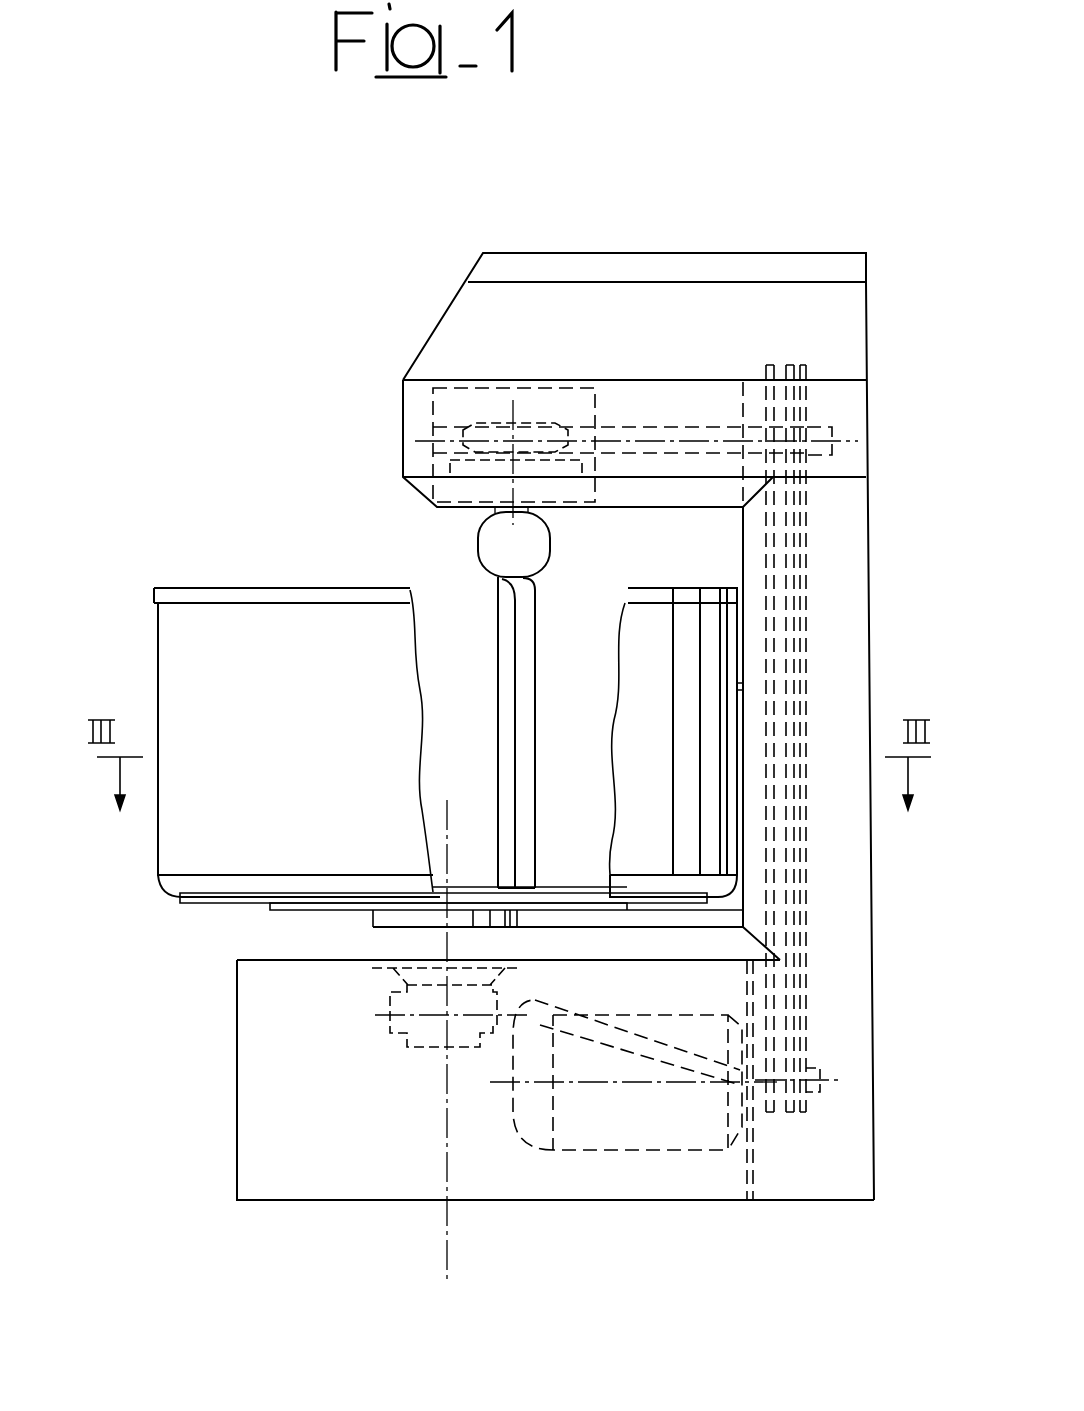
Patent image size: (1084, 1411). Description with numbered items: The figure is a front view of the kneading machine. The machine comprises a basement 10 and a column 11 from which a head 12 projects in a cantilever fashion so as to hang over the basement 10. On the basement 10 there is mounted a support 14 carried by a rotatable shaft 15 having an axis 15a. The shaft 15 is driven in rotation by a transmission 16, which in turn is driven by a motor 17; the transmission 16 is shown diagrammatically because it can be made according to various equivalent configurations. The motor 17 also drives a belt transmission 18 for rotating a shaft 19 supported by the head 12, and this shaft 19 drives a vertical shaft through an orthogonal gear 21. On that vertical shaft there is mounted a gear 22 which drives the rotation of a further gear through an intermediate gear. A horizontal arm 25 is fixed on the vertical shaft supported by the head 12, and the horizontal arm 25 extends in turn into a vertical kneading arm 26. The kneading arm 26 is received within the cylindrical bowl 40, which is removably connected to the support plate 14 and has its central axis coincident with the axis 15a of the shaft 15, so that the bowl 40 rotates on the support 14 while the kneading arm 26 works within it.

The basement 10 is at (258, 1085).
The column 11 is at (848, 930).
The head 12 is at (460, 332).
The support 14 is at (288, 904).
The rotatable shaft 15 is at (373, 914).
The axis 15a is at (448, 1240).
The transmission 16 is at (530, 1010).
The motor 17 is at (630, 1140).
The belt transmission 18 is at (800, 750).
The shaft 19 is at (652, 432).
The orthogonal gear 21 is at (552, 427).
The gear 22 is at (450, 467).
The horizontal arm 25 is at (540, 543).
The kneading arm 26 is at (528, 737).
The cylindrical bowl 40 is at (205, 731).